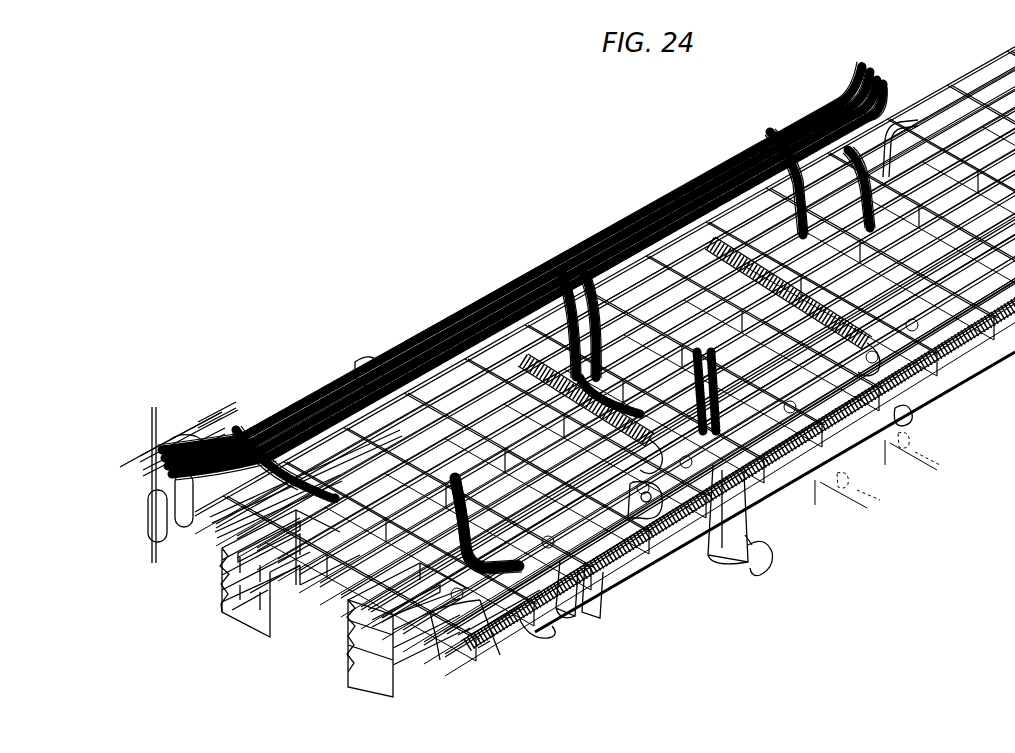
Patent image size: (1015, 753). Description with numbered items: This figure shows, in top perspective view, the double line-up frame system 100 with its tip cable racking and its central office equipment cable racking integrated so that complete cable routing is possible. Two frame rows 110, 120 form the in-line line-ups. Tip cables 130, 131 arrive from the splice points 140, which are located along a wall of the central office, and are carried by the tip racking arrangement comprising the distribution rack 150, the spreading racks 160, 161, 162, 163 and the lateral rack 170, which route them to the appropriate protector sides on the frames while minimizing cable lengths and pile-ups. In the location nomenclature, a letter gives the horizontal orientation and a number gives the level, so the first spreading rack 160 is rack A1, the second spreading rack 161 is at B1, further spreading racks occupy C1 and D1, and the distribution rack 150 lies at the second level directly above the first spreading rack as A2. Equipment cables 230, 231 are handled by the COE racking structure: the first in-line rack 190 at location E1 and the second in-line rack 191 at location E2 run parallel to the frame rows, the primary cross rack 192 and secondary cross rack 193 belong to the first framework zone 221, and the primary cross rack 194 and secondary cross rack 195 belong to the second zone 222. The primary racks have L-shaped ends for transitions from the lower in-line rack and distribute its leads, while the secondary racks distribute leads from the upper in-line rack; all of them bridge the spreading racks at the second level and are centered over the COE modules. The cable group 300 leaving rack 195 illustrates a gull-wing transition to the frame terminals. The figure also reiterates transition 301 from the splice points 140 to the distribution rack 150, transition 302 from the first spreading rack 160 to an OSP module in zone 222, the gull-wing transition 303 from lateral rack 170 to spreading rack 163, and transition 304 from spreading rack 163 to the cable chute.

The double line-up frame system 100 is at (292, 684).
The frame row 110 is at (243, 606).
The frame row 120 is at (368, 678).
The tip cable 130 is at (148, 487).
The splice point 140 is at (150, 522).
The tip cable 131 is at (233, 440).
The distribution rack 150 is at (306, 414).
The first spreading rack 160 is at (240, 580).
The second spreading rack 161 is at (307, 597).
The spreading rack 162 is at (357, 592).
The spreading rack 163 is at (413, 667).
The lateral rack 170 is at (598, 580).
The first in-line rack 190 is at (522, 640).
The second in-line rack 191 is at (487, 650).
The primary cross rack 192 is at (434, 662).
The secondary cross rack 193 is at (633, 513).
The primary cross rack 194 is at (733, 517).
The secondary cross rack 195 is at (368, 368).
The first framework zone 221 is at (181, 402).
The second zone 222 is at (80, 416).
The equipment cable 230 is at (550, 640).
The equipment cable 231 is at (750, 557).
The cable group 300 is at (866, 420).
The transition 301 is at (180, 449).
The transition 302 is at (288, 426).
The gull-wing transition 303 is at (598, 582).
The transition 304 is at (960, 215).
The rack location A1 is at (220, 510).
The rack location A2 is at (212, 487).
The rack location B1 is at (270, 556).
The rack location C1 is at (347, 600).
The rack location D1 is at (395, 630).
The rack location E1 is at (467, 655).
The rack location E2 is at (485, 680).